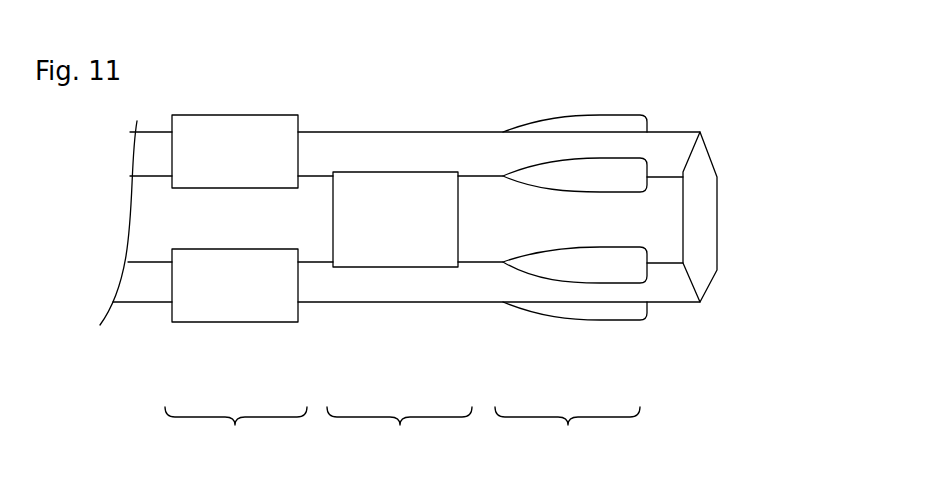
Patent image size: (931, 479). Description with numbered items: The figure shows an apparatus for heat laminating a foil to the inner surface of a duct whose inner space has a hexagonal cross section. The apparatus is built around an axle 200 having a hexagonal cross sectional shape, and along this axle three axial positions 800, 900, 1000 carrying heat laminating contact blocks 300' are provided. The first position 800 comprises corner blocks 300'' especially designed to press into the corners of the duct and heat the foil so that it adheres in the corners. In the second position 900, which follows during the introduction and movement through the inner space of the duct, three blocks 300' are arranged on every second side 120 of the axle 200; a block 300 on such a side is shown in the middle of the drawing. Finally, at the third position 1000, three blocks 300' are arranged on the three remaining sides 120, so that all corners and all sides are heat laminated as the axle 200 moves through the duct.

The side 120 is at (327, 142).
The heat laminating contact block 300' is at (244, 214).
The inline component housing 300 is at (405, 156).
The corner block 300'' is at (637, 221).
The axle 200 is at (673, 218).
The third position 1000 is at (236, 432).
The second position 900 is at (399, 432).
The first position 800 is at (567, 432).